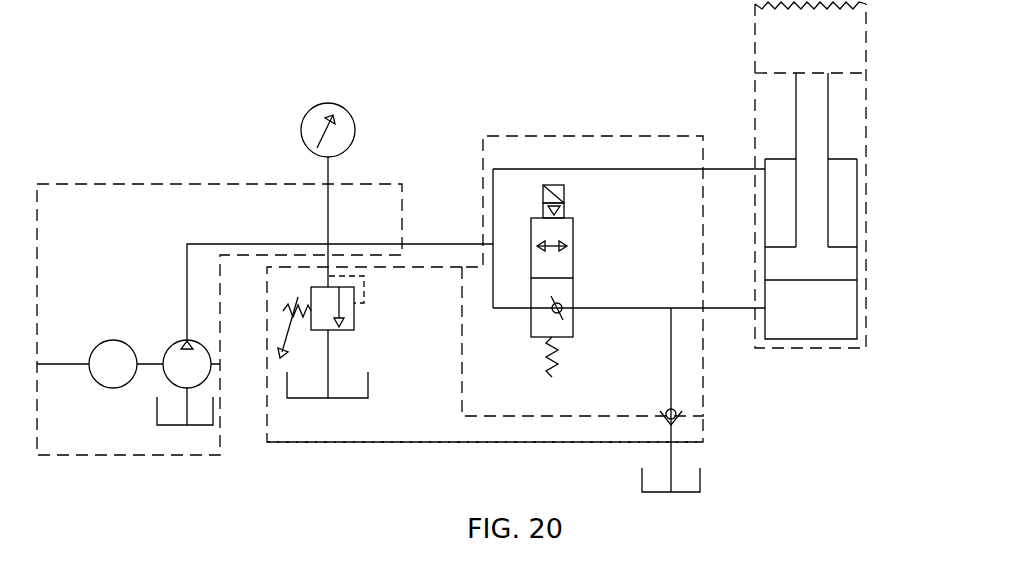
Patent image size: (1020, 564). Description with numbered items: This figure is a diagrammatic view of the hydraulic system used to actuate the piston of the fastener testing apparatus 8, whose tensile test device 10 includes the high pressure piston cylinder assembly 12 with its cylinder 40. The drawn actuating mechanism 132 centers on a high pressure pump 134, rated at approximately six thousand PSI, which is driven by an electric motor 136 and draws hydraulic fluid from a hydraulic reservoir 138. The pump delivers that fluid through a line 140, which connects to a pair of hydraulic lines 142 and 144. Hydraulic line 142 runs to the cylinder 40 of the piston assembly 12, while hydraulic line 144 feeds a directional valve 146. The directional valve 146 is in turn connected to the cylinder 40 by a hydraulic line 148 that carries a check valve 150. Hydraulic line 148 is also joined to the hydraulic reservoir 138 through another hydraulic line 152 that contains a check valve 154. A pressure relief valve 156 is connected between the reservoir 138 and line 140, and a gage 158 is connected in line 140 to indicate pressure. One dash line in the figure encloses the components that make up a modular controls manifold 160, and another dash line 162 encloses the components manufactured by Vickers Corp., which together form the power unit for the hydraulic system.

The fastener testing apparatus 8 is at (752, 79).
The tensile test device 10 is at (818, 51).
The high pressure piston cylinder assembly 12 is at (855, 307).
The cylinder 40 is at (857, 177).
The actuating mechanism 132 is at (322, 450).
The high pressure pump 134 is at (200, 342).
The electric motor 136 is at (115, 340).
The hydraulic reservoir 138 is at (197, 427).
The line 140 is at (413, 243).
The hydraulic line 142 is at (642, 167).
The hydraulic line 144 is at (523, 308).
The directional valve 146 is at (568, 225).
The hydraulic line 148 is at (630, 305).
The check valve 150 is at (563, 304).
The hydraulic line 152 is at (672, 373).
The check valve 154 is at (682, 418).
The pressure relief valve 156 is at (355, 312).
The gage 158 is at (353, 115).
The modular controls manifold 160 is at (410, 442).
The dash line 162 is at (37, 270).